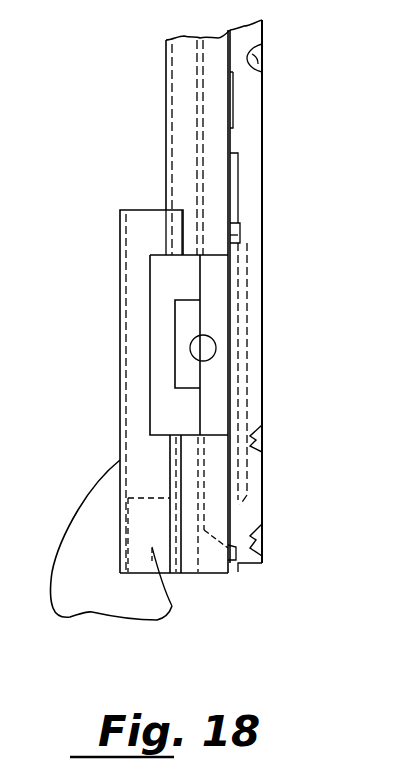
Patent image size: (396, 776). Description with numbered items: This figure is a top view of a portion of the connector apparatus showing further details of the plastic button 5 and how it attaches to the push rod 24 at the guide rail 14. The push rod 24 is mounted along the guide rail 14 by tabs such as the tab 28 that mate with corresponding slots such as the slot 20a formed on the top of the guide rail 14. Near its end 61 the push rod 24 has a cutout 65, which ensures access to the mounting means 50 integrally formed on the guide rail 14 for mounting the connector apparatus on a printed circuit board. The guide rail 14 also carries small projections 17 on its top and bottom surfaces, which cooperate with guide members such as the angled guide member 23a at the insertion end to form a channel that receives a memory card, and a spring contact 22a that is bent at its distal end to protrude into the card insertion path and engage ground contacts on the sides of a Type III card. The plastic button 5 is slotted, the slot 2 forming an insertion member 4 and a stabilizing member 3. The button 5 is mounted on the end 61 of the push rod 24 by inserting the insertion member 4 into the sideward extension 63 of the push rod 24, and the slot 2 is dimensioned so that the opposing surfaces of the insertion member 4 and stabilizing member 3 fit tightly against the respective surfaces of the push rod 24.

The tab 28 is at (232, 143).
The slot 20a is at (232, 195).
The guide rail 14 is at (262, 510).
The projections 17 is at (252, 438).
The spring contact 22a is at (246, 481).
The push rod 24 is at (120, 368).
The cutout 65 is at (176, 268).
The mounting means 50 is at (195, 333).
The slot 2 is at (120, 575).
The insertion member 4 is at (174, 577).
The end 61 is at (205, 577).
The guide member 23a is at (240, 567).
The sideward extension 63 is at (150, 463).
The stabilizing member 3 is at (112, 495).
The plastic button 5 is at (72, 580).